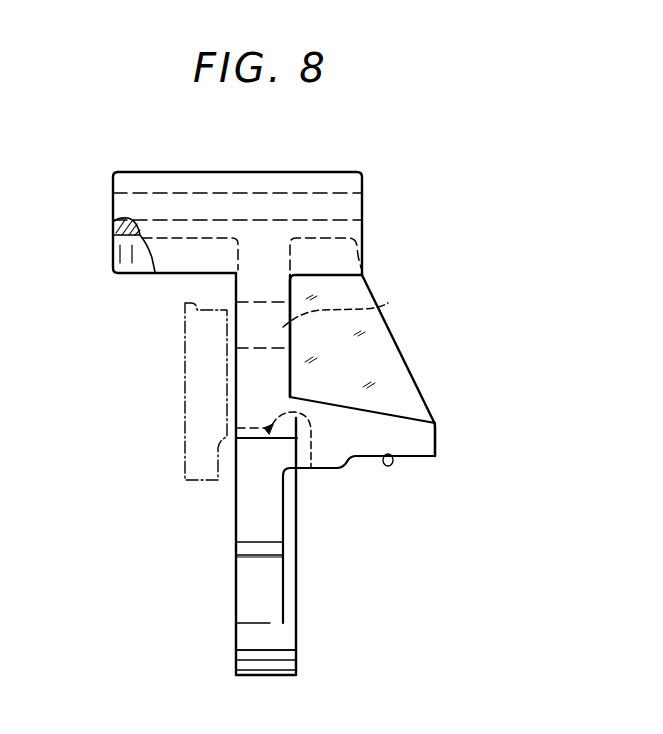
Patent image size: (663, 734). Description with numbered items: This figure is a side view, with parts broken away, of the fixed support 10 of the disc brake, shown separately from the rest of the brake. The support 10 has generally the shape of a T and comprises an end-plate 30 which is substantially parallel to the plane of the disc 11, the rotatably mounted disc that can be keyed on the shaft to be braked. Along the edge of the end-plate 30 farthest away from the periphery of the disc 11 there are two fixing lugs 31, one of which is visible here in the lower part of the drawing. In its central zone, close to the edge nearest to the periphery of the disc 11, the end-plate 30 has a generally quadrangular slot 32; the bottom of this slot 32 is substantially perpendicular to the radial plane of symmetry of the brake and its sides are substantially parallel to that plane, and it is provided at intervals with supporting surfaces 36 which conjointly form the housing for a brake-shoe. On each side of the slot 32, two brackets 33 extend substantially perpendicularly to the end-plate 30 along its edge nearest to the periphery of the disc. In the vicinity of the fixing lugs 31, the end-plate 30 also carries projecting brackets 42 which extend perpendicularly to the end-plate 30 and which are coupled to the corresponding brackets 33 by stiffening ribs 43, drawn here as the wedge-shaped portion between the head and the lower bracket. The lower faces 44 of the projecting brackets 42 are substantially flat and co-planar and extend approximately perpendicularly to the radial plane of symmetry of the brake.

The support 10 is at (118, 288).
The disc 11 is at (182, 358).
The end-plate 30 is at (246, 522).
The fixing lug 31 is at (288, 643).
The slot 32 is at (313, 470).
The bracket 33 is at (268, 178).
The supporting surface 36 is at (383, 305).
The projecting bracket 42 is at (427, 443).
The stiffening rib 43 is at (387, 358).
The lower face 44 is at (390, 454).